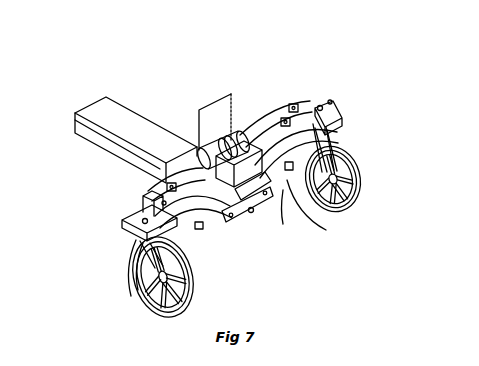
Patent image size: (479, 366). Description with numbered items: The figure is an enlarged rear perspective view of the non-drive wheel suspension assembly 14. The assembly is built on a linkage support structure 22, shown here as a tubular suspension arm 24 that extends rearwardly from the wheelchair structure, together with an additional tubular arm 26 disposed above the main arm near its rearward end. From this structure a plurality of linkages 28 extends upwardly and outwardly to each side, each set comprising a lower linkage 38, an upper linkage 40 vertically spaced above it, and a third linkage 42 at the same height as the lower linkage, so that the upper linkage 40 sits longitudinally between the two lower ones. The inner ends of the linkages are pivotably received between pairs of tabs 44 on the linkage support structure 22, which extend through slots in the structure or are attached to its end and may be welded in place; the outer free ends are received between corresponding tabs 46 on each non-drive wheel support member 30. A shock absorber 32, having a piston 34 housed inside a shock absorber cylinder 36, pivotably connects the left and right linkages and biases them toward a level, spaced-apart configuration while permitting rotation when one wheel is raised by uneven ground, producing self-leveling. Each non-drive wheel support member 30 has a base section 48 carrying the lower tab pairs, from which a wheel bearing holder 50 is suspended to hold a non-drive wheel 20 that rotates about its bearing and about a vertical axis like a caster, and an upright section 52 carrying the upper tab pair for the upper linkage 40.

The non-drive wheel suspension assembly 14 is at (276, 77).
The non-drive wheel 20 is at (148, 305).
The linkage support structure 22 is at (108, 149).
The tubular suspension arm 24 is at (127, 124).
The additional tubular arm 26 is at (268, 204).
The plurality of linkages 28 is at (328, 200).
The non-drive wheel support member 30 is at (127, 239).
The shock absorber 32 is at (241, 124).
The piston 34 is at (253, 130).
The shock absorber cylinder 36 is at (224, 152).
The lower linkage 38 is at (292, 171).
The upper linkage 40 is at (172, 182).
The third linkage 42 is at (160, 181).
The tabs 44 is at (258, 219).
The tabs 46 is at (321, 100).
The base section 48 is at (348, 141).
The wheel bearing holder 50 is at (150, 263).
The upright section 52 is at (336, 117).